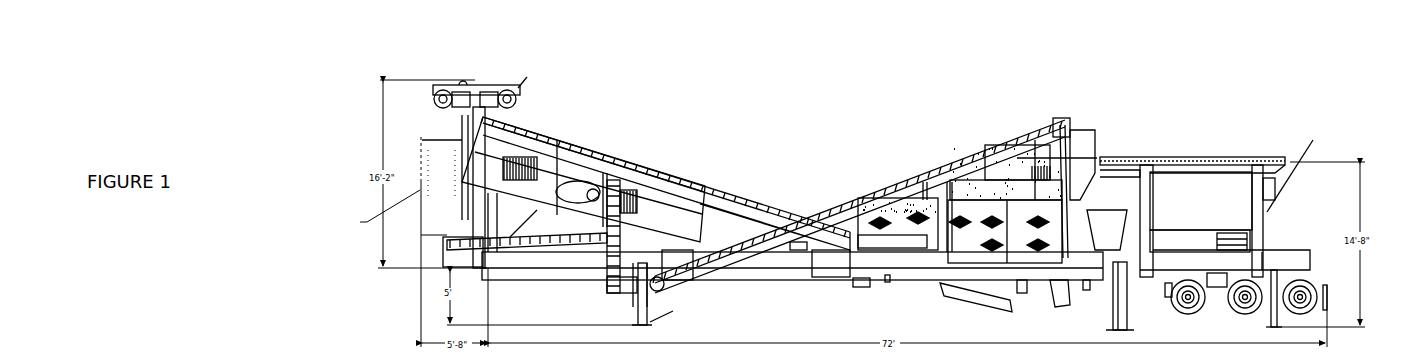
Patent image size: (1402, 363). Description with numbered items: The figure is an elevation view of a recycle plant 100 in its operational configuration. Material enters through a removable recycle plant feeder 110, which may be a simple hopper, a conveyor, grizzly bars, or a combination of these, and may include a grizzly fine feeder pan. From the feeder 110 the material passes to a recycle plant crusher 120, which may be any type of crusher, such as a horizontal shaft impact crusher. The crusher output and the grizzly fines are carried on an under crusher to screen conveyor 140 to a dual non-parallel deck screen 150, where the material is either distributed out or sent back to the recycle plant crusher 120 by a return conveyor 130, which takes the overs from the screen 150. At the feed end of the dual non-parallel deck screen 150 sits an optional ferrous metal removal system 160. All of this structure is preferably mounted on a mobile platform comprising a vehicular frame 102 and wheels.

The recycle plant 100 is at (847, 68).
The vehicular frame 102 is at (752, 267).
The removable recycle plant feeder 110 is at (1215, 115).
The recycle plant crusher 120 is at (1032, 180).
The return conveyor 130 is at (923, 145).
The under crusher to screen conveyor 140 is at (742, 168).
The dual non-parallel deck screen 150 is at (556, 148).
The ferrous metal removal system 160 is at (477, 65).